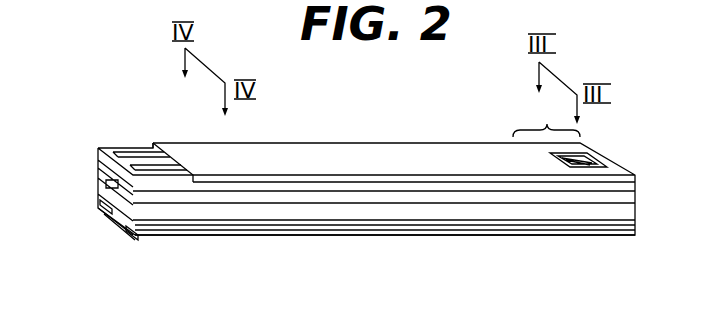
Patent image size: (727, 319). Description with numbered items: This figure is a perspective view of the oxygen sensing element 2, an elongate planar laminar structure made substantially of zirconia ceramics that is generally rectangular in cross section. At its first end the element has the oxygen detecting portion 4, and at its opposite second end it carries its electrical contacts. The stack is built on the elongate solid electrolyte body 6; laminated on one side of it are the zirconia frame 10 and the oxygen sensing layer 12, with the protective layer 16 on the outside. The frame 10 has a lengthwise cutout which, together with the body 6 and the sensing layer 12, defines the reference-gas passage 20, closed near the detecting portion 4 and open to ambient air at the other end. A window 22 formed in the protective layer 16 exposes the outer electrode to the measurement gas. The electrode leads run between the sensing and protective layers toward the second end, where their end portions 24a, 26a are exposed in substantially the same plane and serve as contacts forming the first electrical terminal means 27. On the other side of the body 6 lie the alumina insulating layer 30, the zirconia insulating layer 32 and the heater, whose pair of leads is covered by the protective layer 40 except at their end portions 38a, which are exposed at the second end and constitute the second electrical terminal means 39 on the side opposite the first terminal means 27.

The oxygen sensing element 2 is at (385, 244).
The oxygen detecting portion 4 is at (546, 119).
The solid electrolyte body 6 is at (637, 214).
The zirconia frame 10 is at (637, 202).
The oxygen sensing layer 12 is at (637, 190).
The protective layer 16 is at (638, 179).
The reference-gas passage 20 is at (112, 176).
The window 22 is at (587, 160).
The end portion of electrical lead 24a is at (155, 170).
The end portion of electrical lead 26a is at (127, 151).
The first electrical terminal means 27 is at (146, 137).
The alumina insulating layer 30 is at (602, 228).
The zirconia insulating layer 32 is at (562, 232).
The end portions of heater leads 38a is at (103, 203).
The second electrical terminal means 39 is at (112, 223).
The protective layer 40 is at (527, 237).